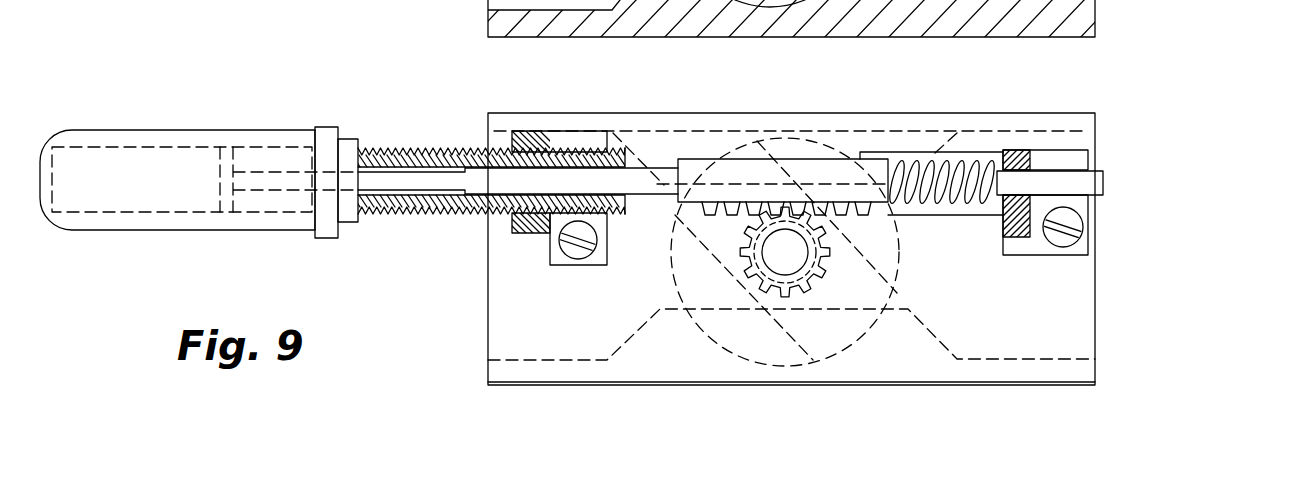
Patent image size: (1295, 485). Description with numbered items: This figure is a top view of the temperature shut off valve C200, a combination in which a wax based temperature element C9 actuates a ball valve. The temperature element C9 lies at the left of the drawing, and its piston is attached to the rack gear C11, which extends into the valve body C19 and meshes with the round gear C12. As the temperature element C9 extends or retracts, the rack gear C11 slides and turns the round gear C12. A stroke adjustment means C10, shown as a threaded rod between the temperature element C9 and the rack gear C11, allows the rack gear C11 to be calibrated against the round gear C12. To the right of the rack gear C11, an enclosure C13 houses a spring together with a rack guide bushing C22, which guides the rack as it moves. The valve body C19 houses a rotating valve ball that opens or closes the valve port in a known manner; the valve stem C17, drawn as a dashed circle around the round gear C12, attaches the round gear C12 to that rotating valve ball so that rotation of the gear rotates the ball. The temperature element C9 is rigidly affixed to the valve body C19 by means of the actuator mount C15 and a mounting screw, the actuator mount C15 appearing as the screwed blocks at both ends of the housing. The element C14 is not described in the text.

The temperature element C9 is at (208, 163).
The stroke adjustment means C10 is at (505, 215).
The rack gear C11 is at (828, 182).
The round gear C12 is at (742, 250).
The enclosure C13 is at (977, 213).
The plunger rod C14 is at (1000, 185).
The actuator mount C15 is at (560, 135).
The valve stem C17 is at (773, 262).
The valve body C19 is at (1093, 20).
The rack guide bushing C22 is at (1017, 152).
The temperature shut off valve C200 is at (1157, 313).